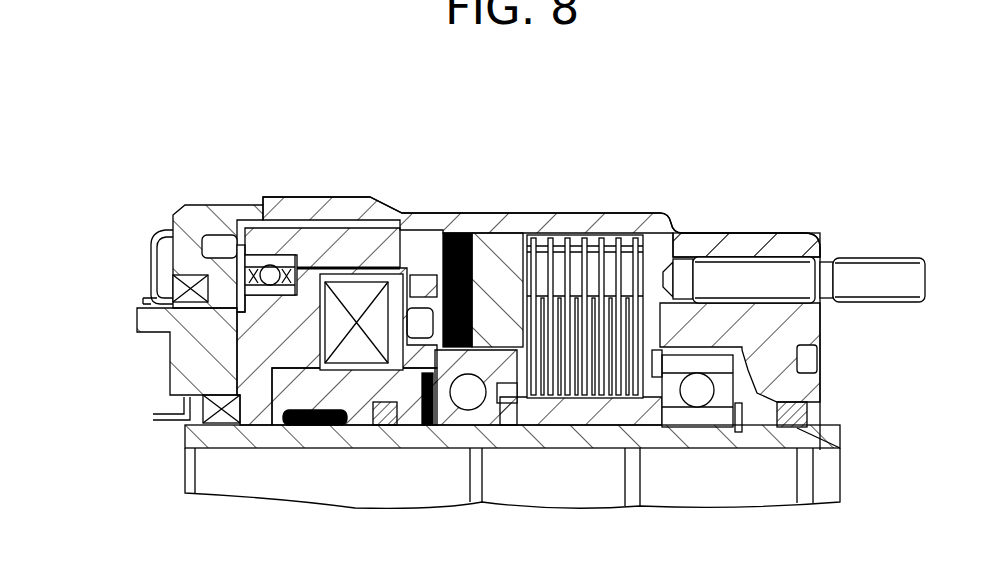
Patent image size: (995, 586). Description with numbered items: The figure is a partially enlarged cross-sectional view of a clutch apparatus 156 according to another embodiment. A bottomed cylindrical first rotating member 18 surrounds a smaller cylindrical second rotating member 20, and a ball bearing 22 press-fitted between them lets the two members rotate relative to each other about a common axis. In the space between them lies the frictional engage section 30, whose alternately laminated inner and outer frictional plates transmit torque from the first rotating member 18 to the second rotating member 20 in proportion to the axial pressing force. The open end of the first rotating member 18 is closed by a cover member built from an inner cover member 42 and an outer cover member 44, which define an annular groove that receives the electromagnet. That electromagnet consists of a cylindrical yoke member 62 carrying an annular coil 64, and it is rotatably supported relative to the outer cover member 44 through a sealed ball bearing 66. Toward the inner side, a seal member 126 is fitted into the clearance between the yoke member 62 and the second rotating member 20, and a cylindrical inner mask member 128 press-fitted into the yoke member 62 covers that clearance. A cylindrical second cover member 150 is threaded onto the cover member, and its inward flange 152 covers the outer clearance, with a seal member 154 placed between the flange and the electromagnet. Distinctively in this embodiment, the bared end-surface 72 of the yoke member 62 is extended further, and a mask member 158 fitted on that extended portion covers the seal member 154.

The clutch apparatus 156 is at (766, 140).
The outer cover member 44 is at (345, 213).
The second cover member 150 is at (222, 215).
The inward flange 152 is at (163, 228).
The mask member 158 is at (157, 247).
The seal member 154 is at (140, 292).
The bared end-surface 72 is at (138, 322).
The yoke member 62 is at (178, 356).
The annular coil 64 is at (363, 355).
The inner cover member 42 is at (323, 390).
The sealed ball bearing 66 is at (273, 260).
The inner mask member 128 is at (160, 420).
The seal member 126 is at (223, 420).
The frictional engage section 30 is at (598, 226).
The first rotating member 18 is at (755, 242).
The ball bearing 22 is at (712, 418).
The second rotating member 20 is at (837, 437).